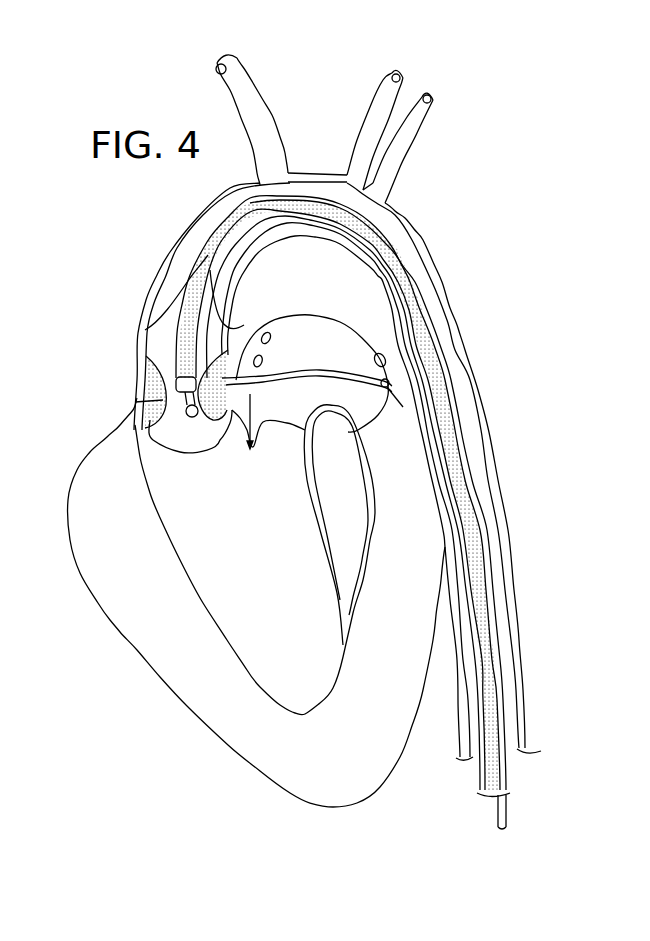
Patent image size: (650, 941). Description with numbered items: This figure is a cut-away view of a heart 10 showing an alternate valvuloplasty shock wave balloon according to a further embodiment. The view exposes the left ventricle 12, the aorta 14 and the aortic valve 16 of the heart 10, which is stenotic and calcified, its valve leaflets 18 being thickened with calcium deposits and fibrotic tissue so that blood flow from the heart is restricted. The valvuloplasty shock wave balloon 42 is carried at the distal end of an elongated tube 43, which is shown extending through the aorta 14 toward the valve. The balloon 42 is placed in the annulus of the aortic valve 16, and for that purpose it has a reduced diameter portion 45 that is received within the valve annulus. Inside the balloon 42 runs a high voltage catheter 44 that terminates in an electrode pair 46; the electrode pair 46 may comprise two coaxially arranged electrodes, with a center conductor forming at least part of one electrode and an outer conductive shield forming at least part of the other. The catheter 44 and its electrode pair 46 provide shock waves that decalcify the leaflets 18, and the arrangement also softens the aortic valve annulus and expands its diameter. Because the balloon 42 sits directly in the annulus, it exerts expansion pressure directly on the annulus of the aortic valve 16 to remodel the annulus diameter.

The heart 10 is at (96, 274).
The left ventricle 12 is at (176, 512).
The aorta 14 is at (218, 224).
The aortic valve 16 is at (102, 401).
The valve leaflets 18 is at (163, 390).
The valvuloplasty shock wave balloon 42 is at (141, 469).
The elongated tube 43 is at (498, 610).
The high voltage catheter 44 is at (197, 288).
The reduced diameter portion 45 is at (150, 378).
The electrode pair 46 is at (251, 413).